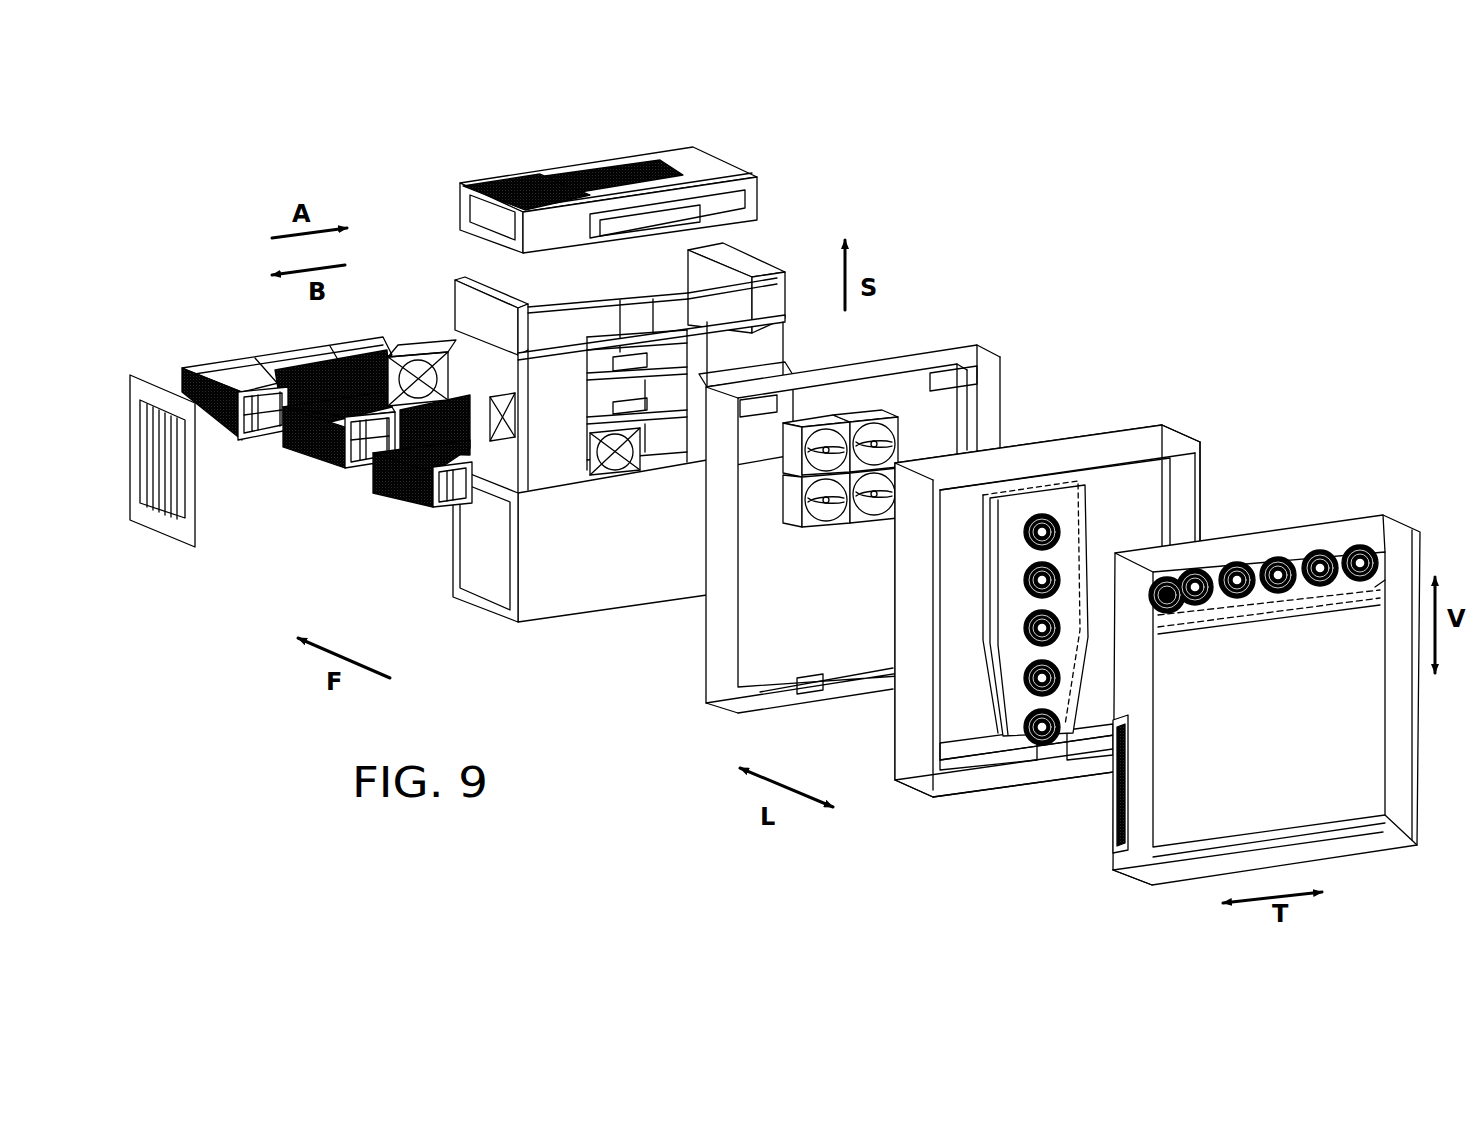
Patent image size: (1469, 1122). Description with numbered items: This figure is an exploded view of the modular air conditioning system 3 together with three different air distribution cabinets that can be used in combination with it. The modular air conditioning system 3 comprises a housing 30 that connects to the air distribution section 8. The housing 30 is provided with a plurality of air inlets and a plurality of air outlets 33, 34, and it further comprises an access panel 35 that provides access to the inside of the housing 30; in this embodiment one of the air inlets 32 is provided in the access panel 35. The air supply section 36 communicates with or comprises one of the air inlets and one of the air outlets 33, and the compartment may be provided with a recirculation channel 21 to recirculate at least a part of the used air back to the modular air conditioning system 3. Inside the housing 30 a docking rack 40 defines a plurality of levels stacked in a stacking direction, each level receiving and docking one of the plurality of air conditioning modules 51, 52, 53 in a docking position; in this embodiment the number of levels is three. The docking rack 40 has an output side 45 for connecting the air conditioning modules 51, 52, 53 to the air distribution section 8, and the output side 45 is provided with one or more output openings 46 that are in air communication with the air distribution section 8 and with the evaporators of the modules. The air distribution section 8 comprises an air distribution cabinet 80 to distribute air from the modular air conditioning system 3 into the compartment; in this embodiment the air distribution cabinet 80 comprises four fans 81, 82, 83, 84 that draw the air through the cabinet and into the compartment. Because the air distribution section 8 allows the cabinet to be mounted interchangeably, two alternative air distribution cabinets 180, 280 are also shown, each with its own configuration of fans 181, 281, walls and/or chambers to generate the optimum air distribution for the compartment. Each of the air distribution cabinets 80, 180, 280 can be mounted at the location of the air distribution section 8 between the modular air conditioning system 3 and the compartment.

The modular air conditioning system 3 is at (470, 620).
The air distribution section 8 is at (687, 720).
The recirculation channel 21 is at (880, 390).
The housing 30 is at (613, 593).
The air inlet 32 is at (146, 468).
The air outlet 33 is at (625, 168).
The air outlet 34 is at (518, 177).
The access panel 35 is at (123, 418).
The air supply section 36 is at (710, 177).
The docking rack 40 is at (624, 399).
The output side 45 is at (552, 470).
The output opening 46 is at (655, 470).
The air conditioning module 51 is at (407, 500).
The air conditioning module 52 is at (338, 480).
The air conditioning module 53 is at (243, 440).
The air distribution cabinet 80 is at (843, 532).
The fan 81 is at (795, 520).
The fan 82 is at (861, 495).
The fan 83 is at (867, 518).
The fan 84 is at (900, 427).
The air distribution cabinet 180 is at (1047, 646).
The fans 181 is at (1065, 623).
The air distribution cabinet 280 is at (1239, 718).
The fans 281 is at (1313, 592).